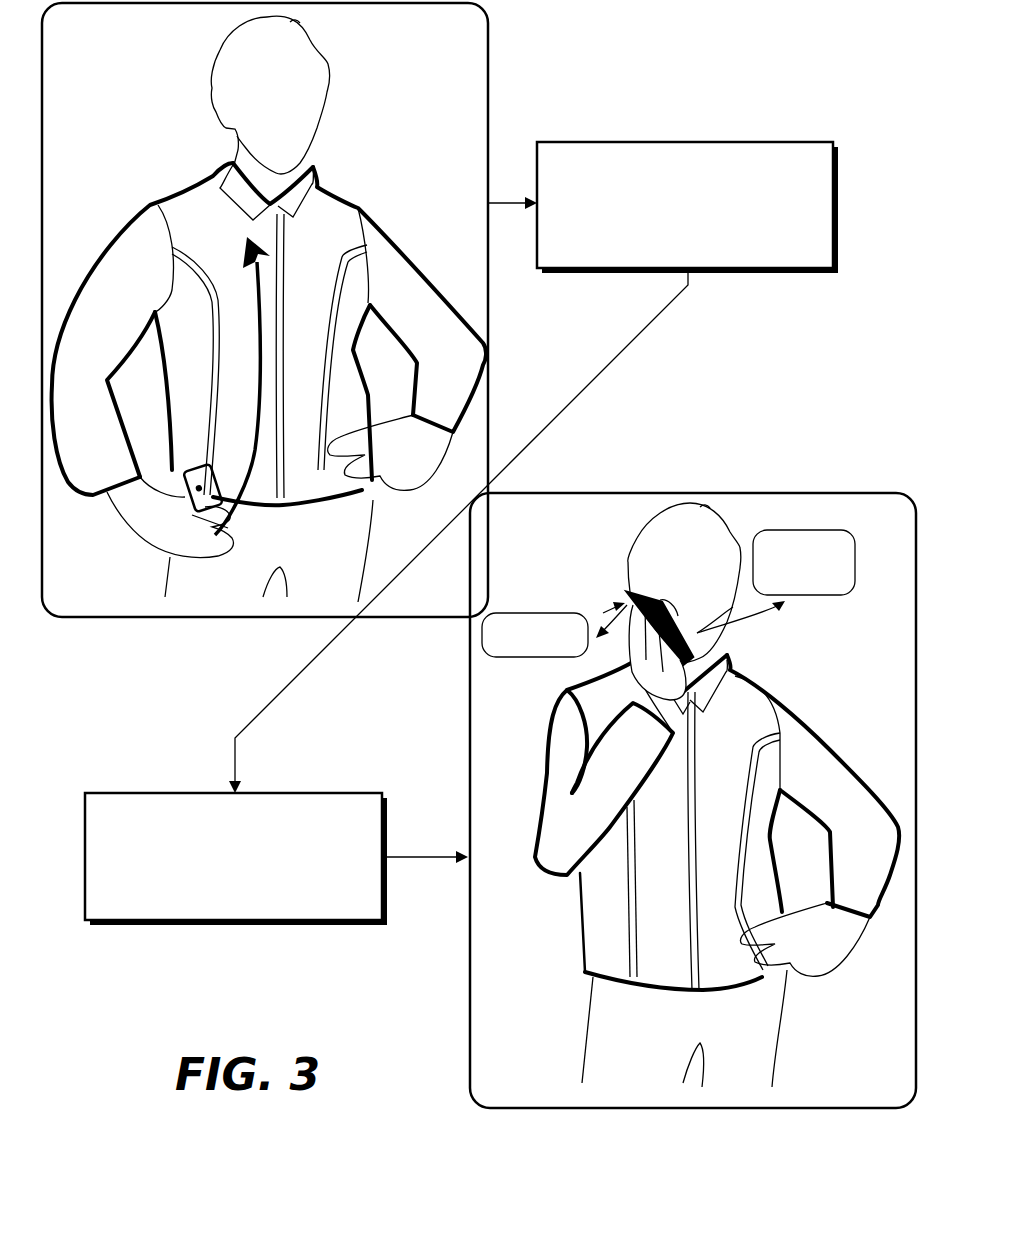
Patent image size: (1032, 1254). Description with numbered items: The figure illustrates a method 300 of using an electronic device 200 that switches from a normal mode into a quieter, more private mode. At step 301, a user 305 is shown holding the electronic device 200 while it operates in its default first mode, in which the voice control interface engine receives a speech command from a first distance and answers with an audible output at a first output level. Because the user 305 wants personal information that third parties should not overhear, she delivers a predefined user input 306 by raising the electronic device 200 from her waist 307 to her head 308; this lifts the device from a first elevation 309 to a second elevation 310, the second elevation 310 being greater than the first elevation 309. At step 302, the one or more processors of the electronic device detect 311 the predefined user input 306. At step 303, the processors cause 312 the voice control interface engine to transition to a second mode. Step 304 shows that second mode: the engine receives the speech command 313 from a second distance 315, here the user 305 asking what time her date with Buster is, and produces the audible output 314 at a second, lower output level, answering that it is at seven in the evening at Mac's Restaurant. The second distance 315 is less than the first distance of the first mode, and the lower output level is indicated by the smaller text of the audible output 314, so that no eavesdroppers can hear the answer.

The electronic device 200 is at (183, 489).
The method 300 is at (753, 67).
The step 301 is at (490, 83).
The step 302 is at (753, 142).
The step 303 is at (140, 793).
The step 304 is at (808, 493).
The user 305 is at (178, 207).
The predefined user input 306 is at (252, 285).
The waist 307 is at (315, 497).
The head 308 is at (228, 67).
The first elevation 309 is at (442, 488).
The second elevation 310 is at (52, 100).
The detect 311 is at (650, 197).
The cause 312 is at (263, 820).
The speech command 313 is at (820, 598).
The audible output 314 is at (540, 613).
The second distance 315 is at (661, 587).